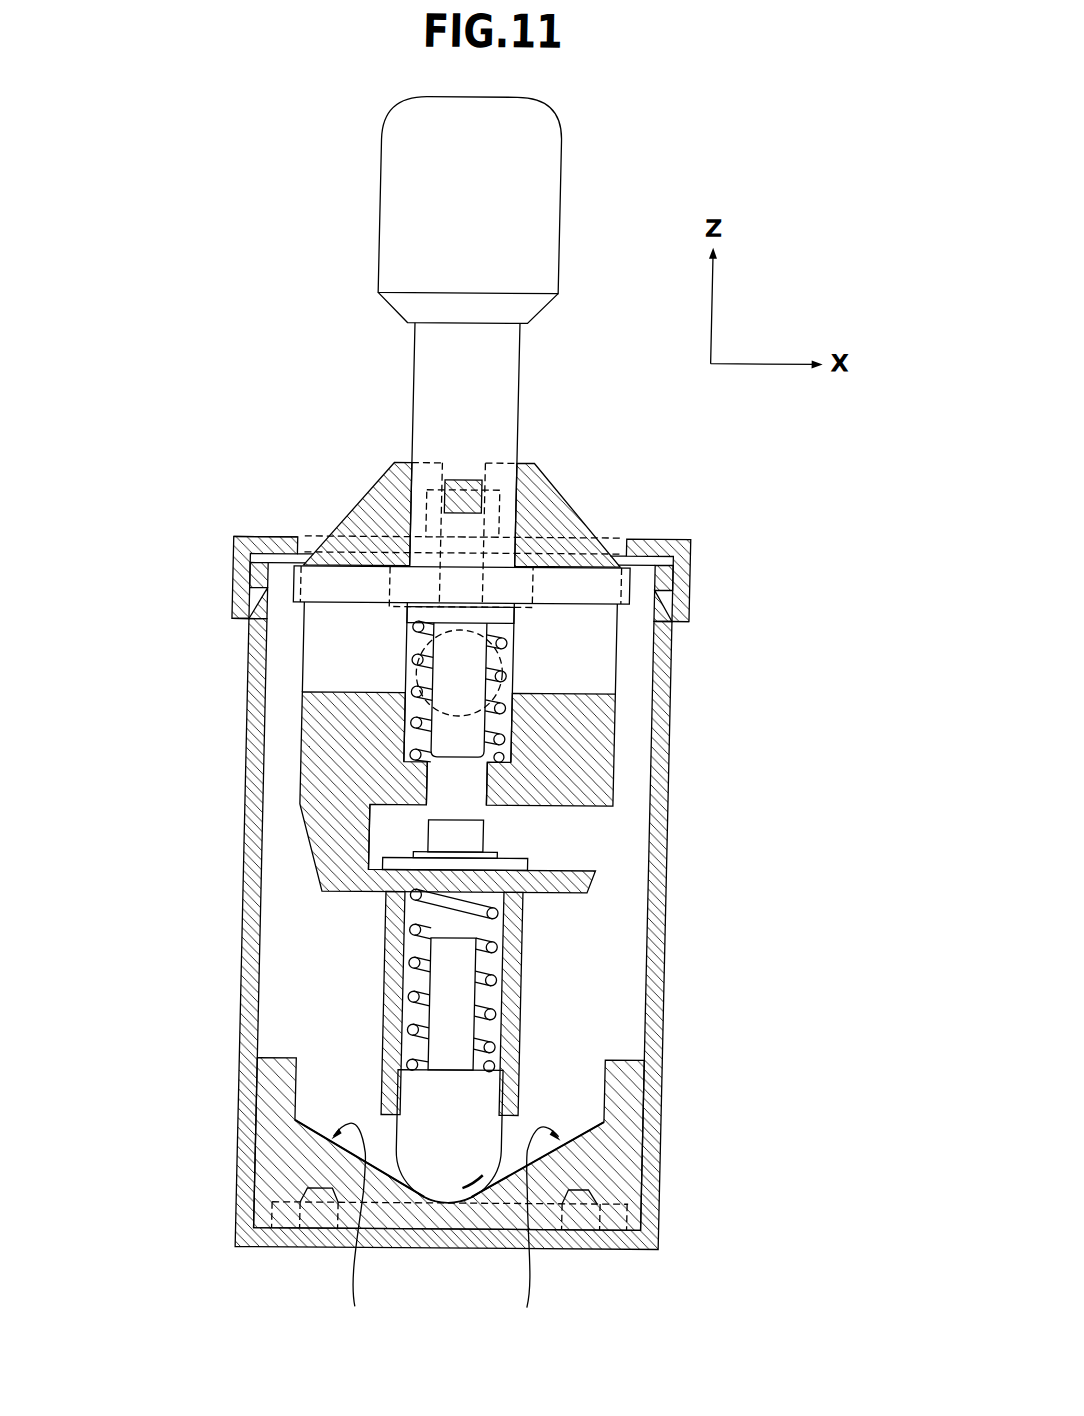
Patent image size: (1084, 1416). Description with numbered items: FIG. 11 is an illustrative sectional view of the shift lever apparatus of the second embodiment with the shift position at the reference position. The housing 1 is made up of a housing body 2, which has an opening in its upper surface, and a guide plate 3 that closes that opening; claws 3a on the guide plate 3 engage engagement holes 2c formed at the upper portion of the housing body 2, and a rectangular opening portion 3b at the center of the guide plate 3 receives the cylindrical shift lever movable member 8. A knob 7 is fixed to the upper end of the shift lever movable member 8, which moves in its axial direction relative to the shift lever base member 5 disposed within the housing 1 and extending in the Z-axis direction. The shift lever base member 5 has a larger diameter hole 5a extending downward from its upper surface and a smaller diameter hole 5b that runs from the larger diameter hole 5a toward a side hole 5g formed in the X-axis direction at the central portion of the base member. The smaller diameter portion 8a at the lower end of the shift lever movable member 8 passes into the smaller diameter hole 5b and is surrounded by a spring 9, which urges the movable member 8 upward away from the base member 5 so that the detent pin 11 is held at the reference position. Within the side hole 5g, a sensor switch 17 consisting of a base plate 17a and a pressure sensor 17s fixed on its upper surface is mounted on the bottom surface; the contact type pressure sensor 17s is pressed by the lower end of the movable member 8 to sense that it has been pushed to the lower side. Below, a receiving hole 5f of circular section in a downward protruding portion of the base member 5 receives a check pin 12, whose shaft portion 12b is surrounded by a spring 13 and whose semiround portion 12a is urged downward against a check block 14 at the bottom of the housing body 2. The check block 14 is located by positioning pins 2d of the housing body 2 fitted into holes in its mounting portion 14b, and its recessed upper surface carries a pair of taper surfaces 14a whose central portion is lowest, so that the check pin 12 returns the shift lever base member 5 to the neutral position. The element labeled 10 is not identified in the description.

The housing 1 is at (510, 854).
The housing body 2 is at (667, 701).
The engagement holes 2c is at (233, 600).
The positioning pins 2d is at (329, 1186).
The guide plate 3 is at (688, 567).
The claws 3a is at (237, 617).
The rectangular opening portion 3b is at (300, 541).
The shift lever base member 5 is at (318, 778).
The larger diameter hole 5a is at (419, 741).
The smaller diameter hole 5b is at (442, 782).
The receiving hole 5f is at (492, 929).
The side hole 5g is at (602, 817).
The knob 7 is at (370, 170).
The shift lever movable member 8 is at (500, 388).
The smaller diameter portion 8a is at (437, 678).
The spring 9 is at (410, 725).
The flange plate 10 is at (578, 580).
The detent pin 11 is at (464, 497).
The check pin 12 is at (420, 1102).
The semiround portion 12a is at (455, 1180).
The shaft portion 12b is at (445, 1050).
The spring 13 is at (403, 994).
The check block 14 is at (639, 1091).
The taper surfaces 14a is at (447, 1228).
The mounting portion 14b is at (652, 1218).
The sensor switch 17 is at (610, 866).
The pressure sensor 17s is at (475, 838).
The base plate 17a is at (528, 862).